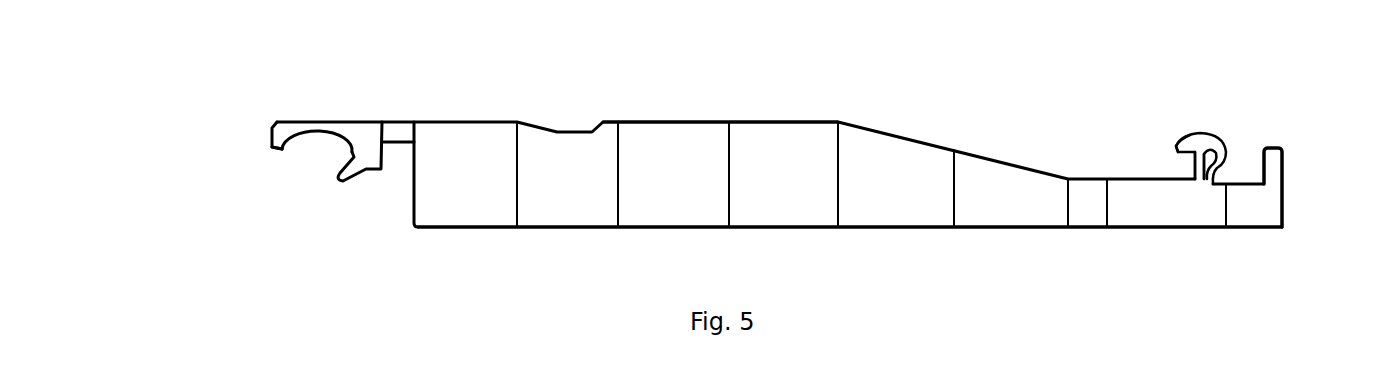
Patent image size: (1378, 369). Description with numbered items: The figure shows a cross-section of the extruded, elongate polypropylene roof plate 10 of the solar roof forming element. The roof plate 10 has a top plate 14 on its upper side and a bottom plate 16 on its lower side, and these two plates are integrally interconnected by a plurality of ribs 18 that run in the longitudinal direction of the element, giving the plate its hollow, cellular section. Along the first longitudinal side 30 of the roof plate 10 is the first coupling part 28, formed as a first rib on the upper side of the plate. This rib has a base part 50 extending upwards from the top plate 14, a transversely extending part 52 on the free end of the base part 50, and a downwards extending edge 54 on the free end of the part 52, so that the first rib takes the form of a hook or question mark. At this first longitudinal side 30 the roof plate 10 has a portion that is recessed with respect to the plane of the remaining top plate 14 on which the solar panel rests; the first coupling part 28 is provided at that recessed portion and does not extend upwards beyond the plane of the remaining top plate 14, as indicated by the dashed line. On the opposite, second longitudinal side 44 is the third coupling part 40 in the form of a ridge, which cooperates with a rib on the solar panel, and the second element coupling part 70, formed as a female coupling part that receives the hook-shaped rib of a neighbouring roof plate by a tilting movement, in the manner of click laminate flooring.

The roof plate 10 is at (755, 173).
The top plate 14 is at (827, 118).
The bottom plate 16 is at (693, 230).
The ribs 18 is at (620, 182).
The first coupling part 28 is at (1189, 137).
The first longitudinal side 30 is at (1293, 167).
The third coupling part 40 is at (272, 152).
The second longitudinal side 44 is at (284, 168).
The base part 50 is at (1193, 168).
The transversely extending part 52 is at (1197, 146).
The downwards extending edge 54 is at (1175, 147).
The second element coupling part 70 is at (327, 148).